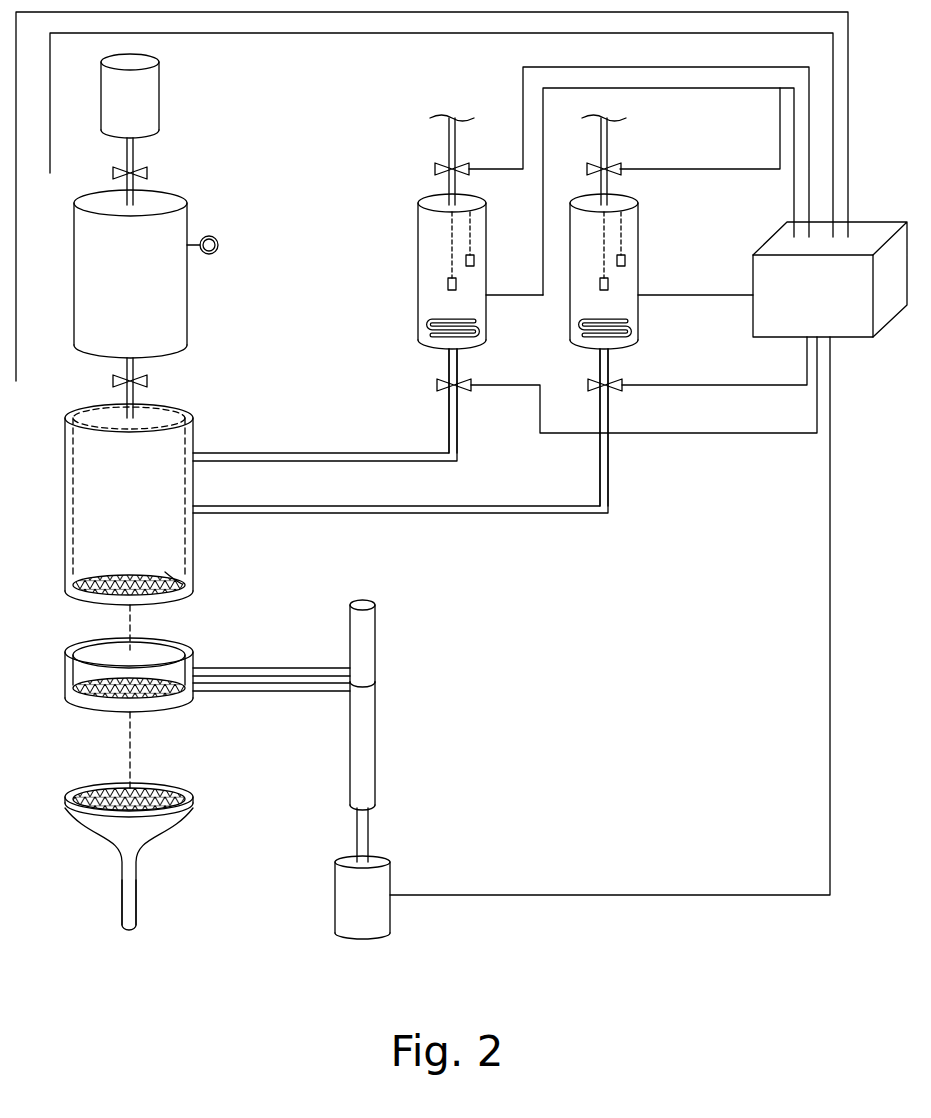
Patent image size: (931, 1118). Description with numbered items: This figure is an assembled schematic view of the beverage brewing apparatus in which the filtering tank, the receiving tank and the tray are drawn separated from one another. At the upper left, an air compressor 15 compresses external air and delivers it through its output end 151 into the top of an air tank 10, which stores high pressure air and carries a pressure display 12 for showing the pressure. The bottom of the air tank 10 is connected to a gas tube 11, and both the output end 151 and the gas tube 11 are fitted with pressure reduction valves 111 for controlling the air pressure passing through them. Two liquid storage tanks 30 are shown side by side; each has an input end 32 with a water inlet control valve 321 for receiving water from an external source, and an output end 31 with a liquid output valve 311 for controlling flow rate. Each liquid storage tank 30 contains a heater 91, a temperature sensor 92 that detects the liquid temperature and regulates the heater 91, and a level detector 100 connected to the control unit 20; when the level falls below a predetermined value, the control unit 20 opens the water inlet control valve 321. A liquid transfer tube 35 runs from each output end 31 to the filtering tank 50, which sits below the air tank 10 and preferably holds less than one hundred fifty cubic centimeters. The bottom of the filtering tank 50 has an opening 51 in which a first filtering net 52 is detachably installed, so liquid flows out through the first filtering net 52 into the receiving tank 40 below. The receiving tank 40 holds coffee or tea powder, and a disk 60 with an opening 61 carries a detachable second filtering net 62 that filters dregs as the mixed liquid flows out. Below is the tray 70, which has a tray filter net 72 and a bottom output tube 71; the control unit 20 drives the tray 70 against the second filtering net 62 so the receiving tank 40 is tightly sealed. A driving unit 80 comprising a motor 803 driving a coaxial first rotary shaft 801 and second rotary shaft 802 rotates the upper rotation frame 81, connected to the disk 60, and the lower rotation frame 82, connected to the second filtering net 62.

The air tank 10 is at (187, 296).
The gas tube 11 is at (133, 366).
The pressure display 12 is at (219, 246).
The air compressor 15 is at (160, 95).
The output end 151 is at (140, 143).
The pressure reduction valve 111 is at (147, 173).
The control unit 20 is at (883, 225).
The liquid storage tank 30 is at (418, 272).
The output end 31 is at (440, 356).
The liquid output valve 311 is at (438, 385).
The input end 32 is at (440, 195).
The water inlet control valve 321 is at (432, 165).
The liquid transfer tube 35 is at (329, 452).
The receiving tank 40 is at (66, 643).
The filtering tank 50 is at (65, 470).
The opening 51 is at (92, 574).
The first filtering net 52 is at (165, 572).
The disk 60 is at (67, 656).
The opening 61 is at (77, 686).
The second filtering net 62 is at (76, 698).
The tray 70 is at (67, 795).
The output tube 71 is at (122, 896).
The tray filter net 72 is at (168, 790).
The driving unit 80 is at (360, 769).
The first rotary shaft 801 is at (378, 645).
The second rotary shaft 802 is at (378, 747).
The motor 803 is at (336, 893).
The upper rotation frame 81 is at (273, 666).
The lower rotation frame 82 is at (271, 694).
The heater 91 is at (430, 327).
The temperature sensor 92 is at (475, 261).
The level detector 100 is at (457, 285).